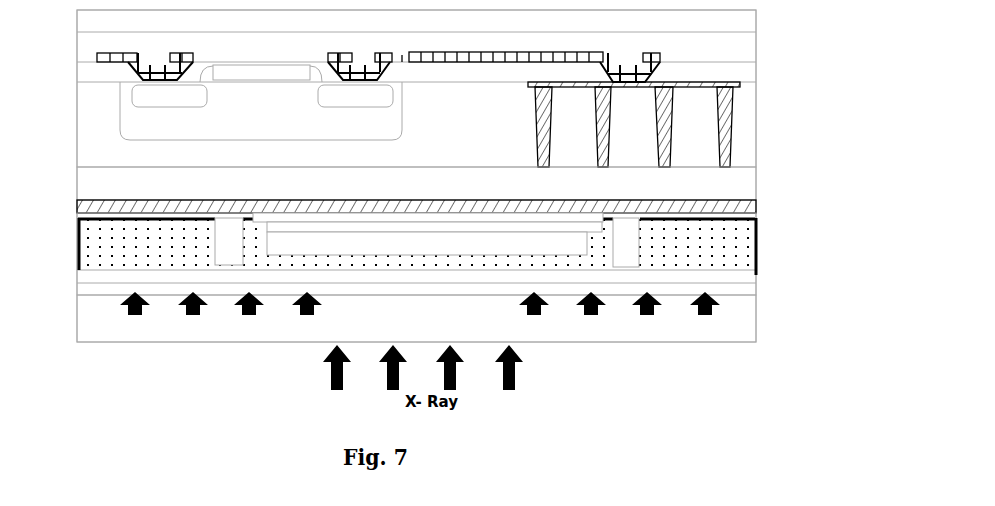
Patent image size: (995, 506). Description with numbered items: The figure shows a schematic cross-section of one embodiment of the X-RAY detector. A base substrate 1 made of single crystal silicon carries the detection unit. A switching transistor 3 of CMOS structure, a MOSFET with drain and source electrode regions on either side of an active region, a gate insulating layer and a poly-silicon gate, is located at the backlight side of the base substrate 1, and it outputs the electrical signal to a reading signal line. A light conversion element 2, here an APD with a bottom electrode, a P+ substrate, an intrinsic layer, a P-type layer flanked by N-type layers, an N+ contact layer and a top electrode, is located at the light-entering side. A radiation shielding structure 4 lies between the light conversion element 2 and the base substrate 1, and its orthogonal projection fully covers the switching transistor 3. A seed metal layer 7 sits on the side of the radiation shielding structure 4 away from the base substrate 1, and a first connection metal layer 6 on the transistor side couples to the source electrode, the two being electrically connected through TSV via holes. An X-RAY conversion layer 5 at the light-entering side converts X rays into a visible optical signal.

The base substrate 1 is at (435, 88).
The light conversion element 2 is at (55, 223).
The switching transistor 3 is at (62, 53).
The radiation shielding structure 4 is at (757, 184).
The X-RAY conversion layer 5 is at (758, 323).
The first connection metal layer 6 is at (742, 86).
The seed metal layer 7 is at (757, 203).